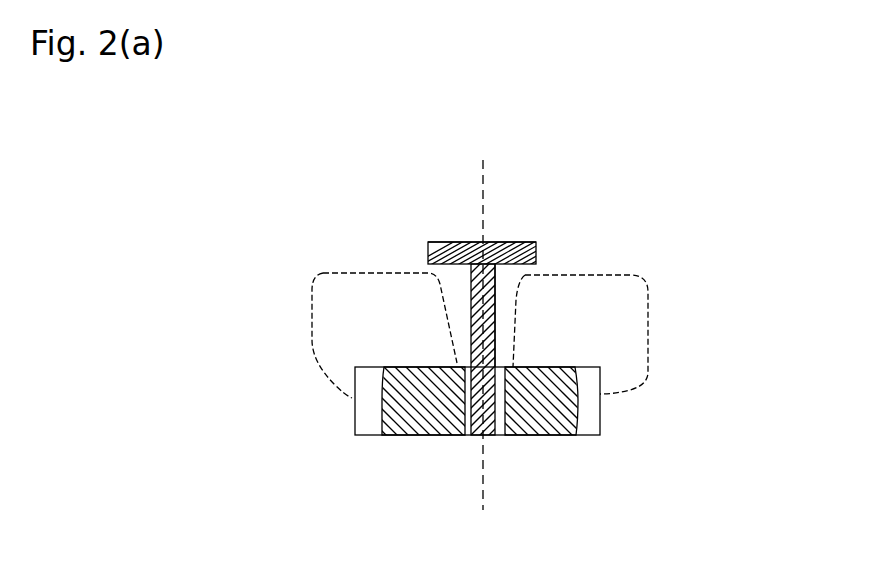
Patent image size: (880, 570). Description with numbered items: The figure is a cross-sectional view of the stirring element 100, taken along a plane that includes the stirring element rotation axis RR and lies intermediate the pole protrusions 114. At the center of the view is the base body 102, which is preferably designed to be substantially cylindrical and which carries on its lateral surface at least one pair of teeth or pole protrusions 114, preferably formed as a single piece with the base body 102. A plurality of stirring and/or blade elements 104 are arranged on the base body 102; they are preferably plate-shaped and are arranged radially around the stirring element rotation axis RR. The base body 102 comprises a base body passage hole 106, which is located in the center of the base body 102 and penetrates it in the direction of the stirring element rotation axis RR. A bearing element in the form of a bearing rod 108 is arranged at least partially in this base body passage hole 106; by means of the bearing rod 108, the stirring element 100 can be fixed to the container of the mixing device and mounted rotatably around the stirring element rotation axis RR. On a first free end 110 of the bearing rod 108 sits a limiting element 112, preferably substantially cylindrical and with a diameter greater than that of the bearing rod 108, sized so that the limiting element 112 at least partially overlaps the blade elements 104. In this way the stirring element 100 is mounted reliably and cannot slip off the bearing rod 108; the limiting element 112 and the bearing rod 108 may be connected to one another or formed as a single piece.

The stirring element 100 is at (564, 425).
The base body 102 is at (397, 421).
The blade elements 104 is at (338, 291).
The base body passage hole 106 is at (462, 426).
The bearing rod 108 is at (492, 283).
The first free end 110 is at (470, 267).
The limiting element 112 is at (452, 249).
The pole protrusions 114 is at (355, 418).
The stirring element rotation axis RR is at (480, 161).